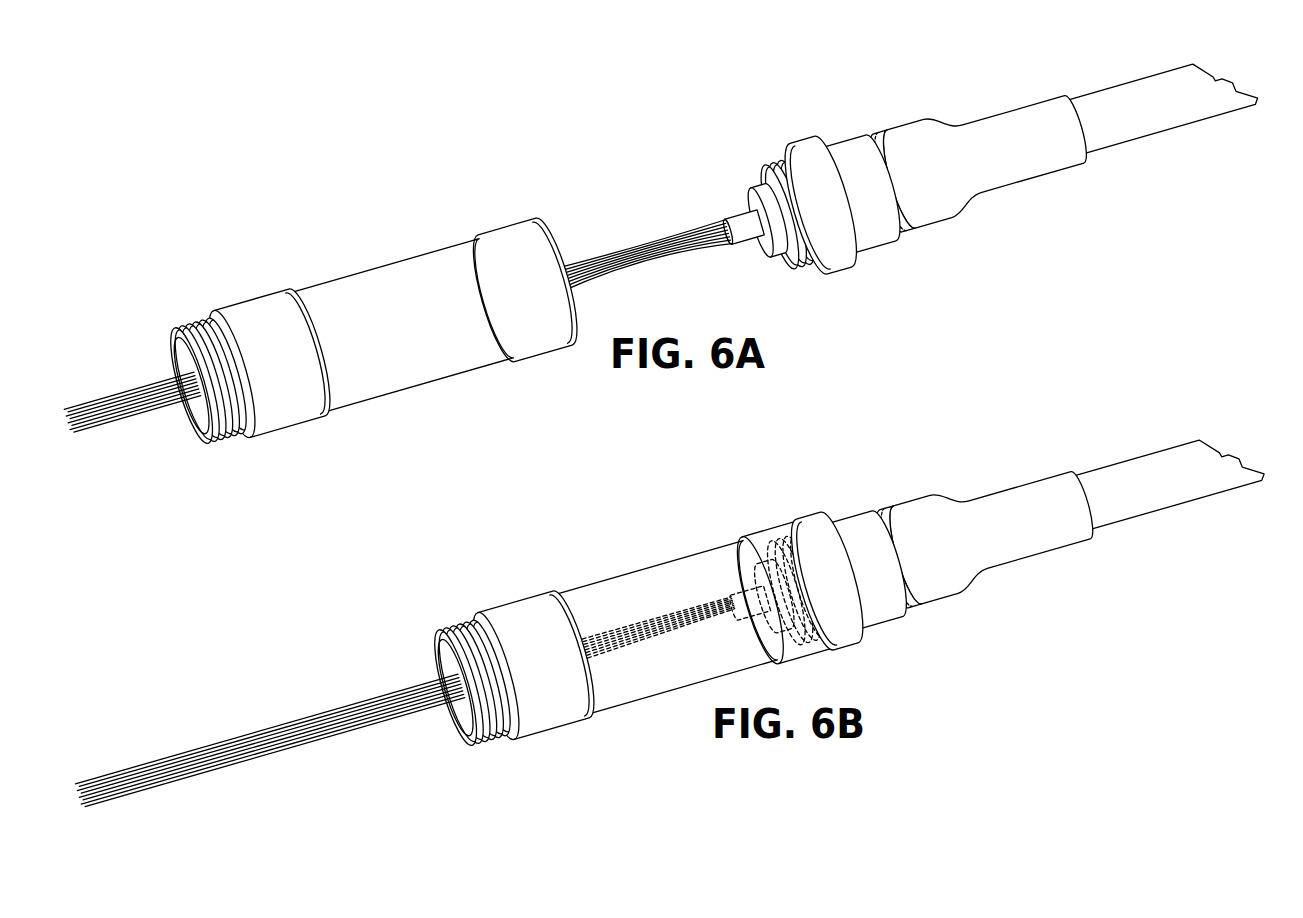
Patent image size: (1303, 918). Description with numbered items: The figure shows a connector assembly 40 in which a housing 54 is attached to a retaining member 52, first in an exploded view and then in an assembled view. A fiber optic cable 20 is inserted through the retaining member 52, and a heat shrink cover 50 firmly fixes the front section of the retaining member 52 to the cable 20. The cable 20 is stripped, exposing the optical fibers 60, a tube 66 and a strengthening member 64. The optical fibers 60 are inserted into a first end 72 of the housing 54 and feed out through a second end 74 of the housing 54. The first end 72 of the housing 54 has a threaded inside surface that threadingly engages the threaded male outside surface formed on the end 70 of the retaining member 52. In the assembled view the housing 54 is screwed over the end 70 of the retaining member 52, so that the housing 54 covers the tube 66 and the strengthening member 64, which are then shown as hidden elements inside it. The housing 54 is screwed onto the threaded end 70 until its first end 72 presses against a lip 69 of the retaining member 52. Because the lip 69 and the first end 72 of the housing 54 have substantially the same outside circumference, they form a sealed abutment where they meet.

In FIG. 6A, the fiber optic cable 20 is at (1130, 83).
In FIG. 6B, the fiber optic cable 20 is at (1140, 459).
In FIG. 6A, the connector assembly 40 is at (593, 138).
In FIG. 6B, the connector assembly 40 is at (695, 490).
In FIG. 6A, the heat shrink cover 50 is at (966, 124).
In FIG. 6B, the heat shrink cover 50 is at (976, 499).
In FIG. 6A, the retaining member 52 is at (834, 144).
In FIG. 6B, the retaining member 52 is at (845, 519).
In FIG. 6A, the housing 54 is at (381, 265).
In FIG. 6B, the housing 54 is at (642, 567).
In FIG. 6A, the optical fibers 60 is at (140, 422).
In FIG. 6B, the optical fibers 60 is at (402, 716).
In FIG. 6A, the strengthening member 64 is at (752, 197).
In FIG. 6A, the tube 66 is at (750, 244).
In FIG. 6A, the lip 69 is at (790, 139).
In FIG. 6B, the lip 69 is at (799, 517).
In FIG. 6A, the end 70 is at (798, 268).
In FIG. 6A, the first end 72 is at (547, 232).
In FIG. 6A, the second end 74 is at (173, 358).
In FIG. 6B, the second end 74 is at (437, 660).